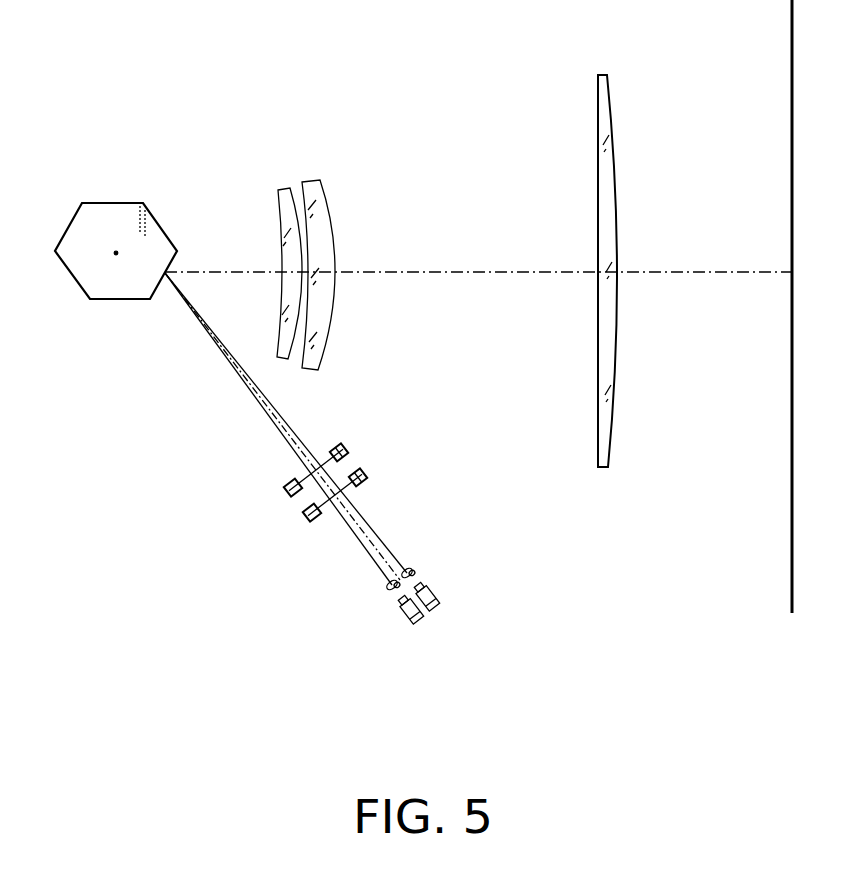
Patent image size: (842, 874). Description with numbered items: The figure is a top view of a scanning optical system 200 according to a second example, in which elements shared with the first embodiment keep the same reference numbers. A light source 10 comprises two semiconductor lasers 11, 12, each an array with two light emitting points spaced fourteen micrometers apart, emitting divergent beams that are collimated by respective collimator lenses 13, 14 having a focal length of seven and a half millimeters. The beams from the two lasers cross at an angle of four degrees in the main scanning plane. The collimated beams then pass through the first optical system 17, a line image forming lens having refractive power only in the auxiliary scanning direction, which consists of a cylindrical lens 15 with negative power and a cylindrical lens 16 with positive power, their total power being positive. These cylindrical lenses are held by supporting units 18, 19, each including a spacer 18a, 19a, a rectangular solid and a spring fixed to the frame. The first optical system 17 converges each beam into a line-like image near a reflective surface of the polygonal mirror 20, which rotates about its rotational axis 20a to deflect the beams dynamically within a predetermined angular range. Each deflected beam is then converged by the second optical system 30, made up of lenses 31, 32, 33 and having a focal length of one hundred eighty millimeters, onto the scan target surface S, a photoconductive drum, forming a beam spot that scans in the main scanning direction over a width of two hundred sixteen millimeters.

The scanning optical system 200 is at (120, 64).
The light source 10 is at (382, 674).
The semiconductor laser 11 is at (414, 628).
The semiconductor laser 12 is at (440, 614).
The collimator lens 13 is at (388, 589).
The collimator lens 14 is at (412, 572).
The cylindrical lens 15 is at (287, 491).
The cylindrical lens 16 is at (293, 488).
The first optical system 17 is at (232, 490).
The supporting unit 18 is at (358, 477).
The spacer 18a is at (357, 478).
The supporting unit 19 is at (339, 452).
The spacer 19a is at (338, 453).
The polygonal mirror 20 is at (103, 202).
The rotational axis 20a is at (116, 253).
The second optical system 30 is at (233, 60).
The lens 31 is at (280, 190).
The lens 32 is at (318, 183).
The lens 33 is at (597, 93).
The scan target surface S is at (792, 548).